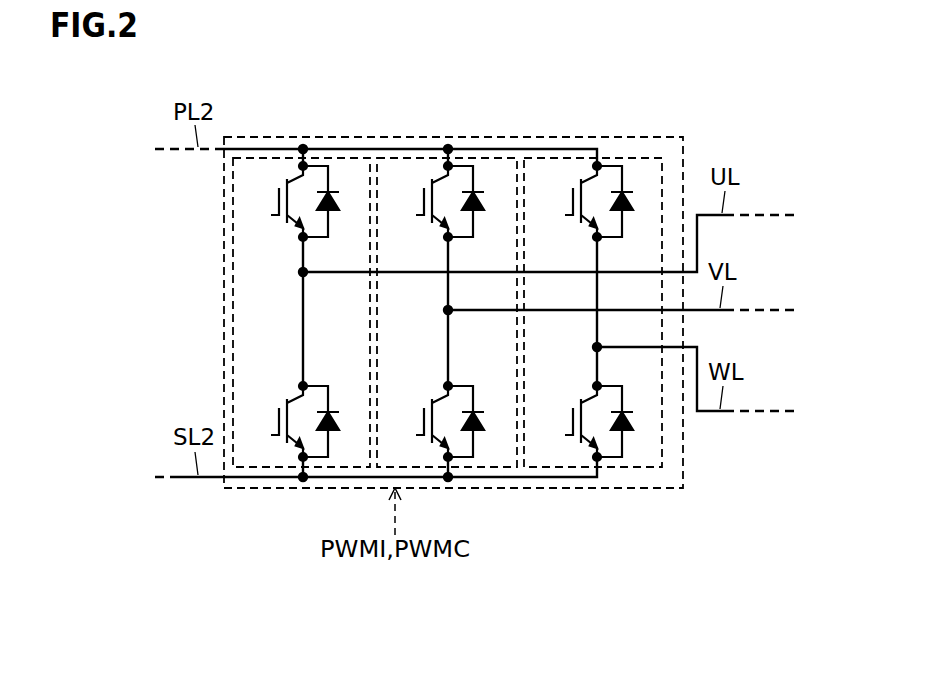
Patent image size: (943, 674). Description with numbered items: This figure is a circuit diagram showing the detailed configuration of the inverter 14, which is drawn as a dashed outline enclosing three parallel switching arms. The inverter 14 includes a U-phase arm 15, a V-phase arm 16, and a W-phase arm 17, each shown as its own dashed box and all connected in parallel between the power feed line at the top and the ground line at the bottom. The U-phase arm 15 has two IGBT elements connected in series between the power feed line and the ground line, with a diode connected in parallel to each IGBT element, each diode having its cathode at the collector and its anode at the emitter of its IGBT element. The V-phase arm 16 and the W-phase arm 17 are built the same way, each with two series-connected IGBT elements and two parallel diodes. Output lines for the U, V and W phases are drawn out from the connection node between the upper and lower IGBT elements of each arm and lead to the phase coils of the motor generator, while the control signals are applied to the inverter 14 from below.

The inverter 14 is at (488, 274).
The U-phase arm 15 is at (341, 157).
The V-phase arm 16 is at (487, 157).
The W-phase arm 17 is at (634, 157).